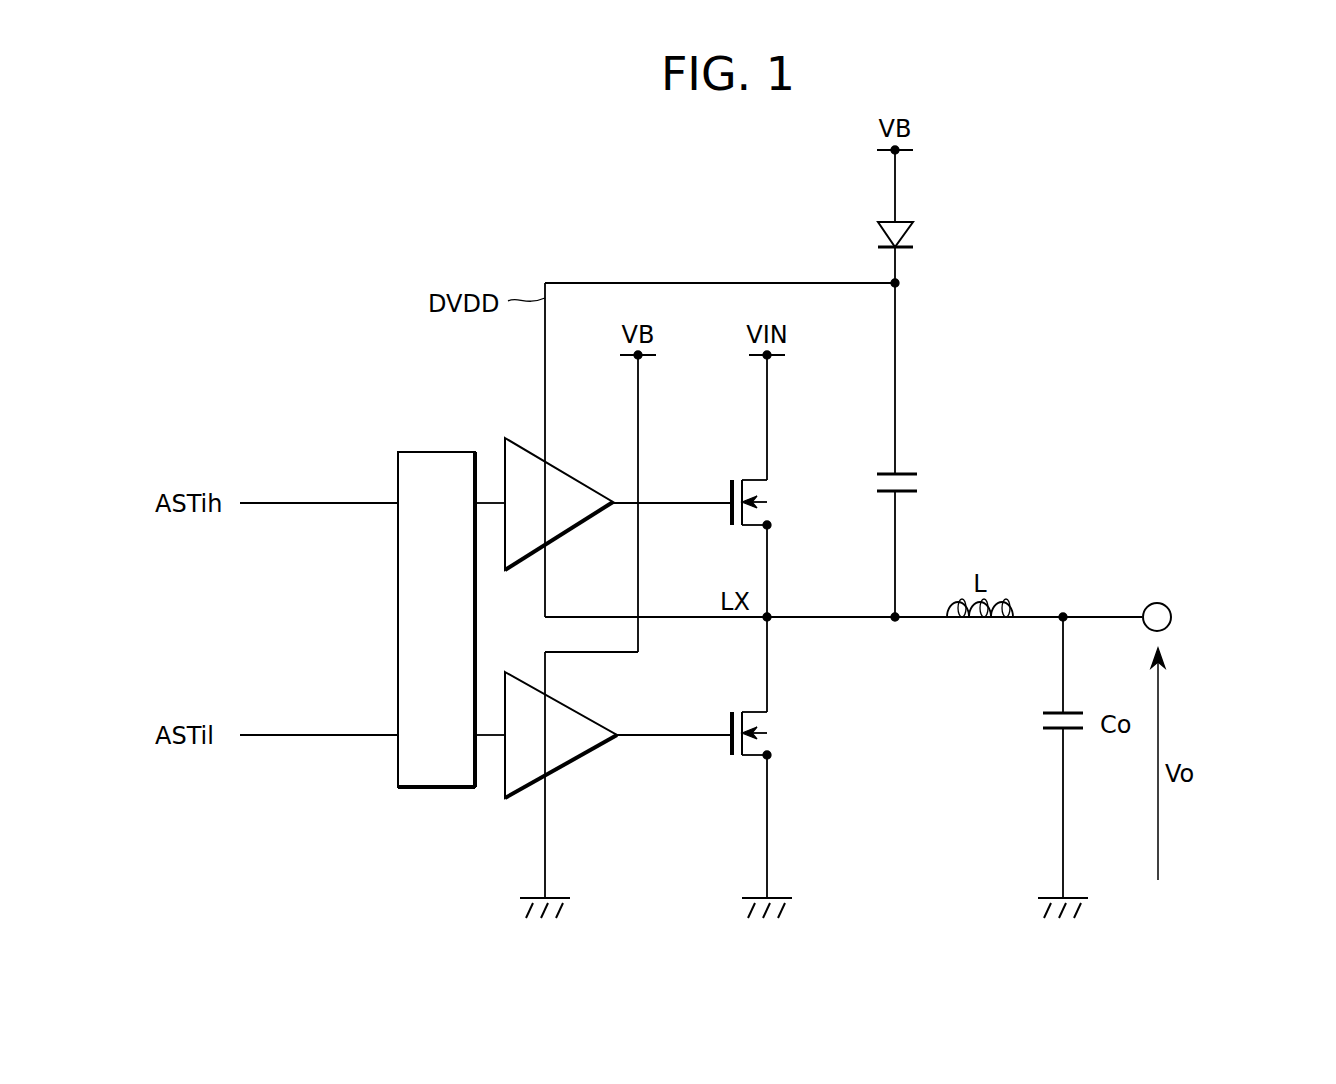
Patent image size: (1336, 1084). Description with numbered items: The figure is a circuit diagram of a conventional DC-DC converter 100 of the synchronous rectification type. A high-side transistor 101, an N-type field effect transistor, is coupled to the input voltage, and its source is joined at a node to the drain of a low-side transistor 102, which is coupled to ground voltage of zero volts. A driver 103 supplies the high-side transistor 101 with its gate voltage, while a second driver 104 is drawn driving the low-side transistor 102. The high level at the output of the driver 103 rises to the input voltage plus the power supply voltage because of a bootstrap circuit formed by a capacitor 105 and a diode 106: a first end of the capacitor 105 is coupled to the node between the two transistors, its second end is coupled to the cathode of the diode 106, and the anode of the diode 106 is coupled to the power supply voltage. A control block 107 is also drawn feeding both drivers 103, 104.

The DC-DC converter 100 is at (1140, 191).
The high-side transistor 101 is at (800, 503).
The low-side transistor 102 is at (800, 732).
The driver 103 is at (516, 442).
The low-side driver DRV104 104 is at (516, 800).
The capacitor 105 is at (934, 489).
The diode 106 is at (933, 242).
The anti-shoot-through circuit AST107 107 is at (398, 472).